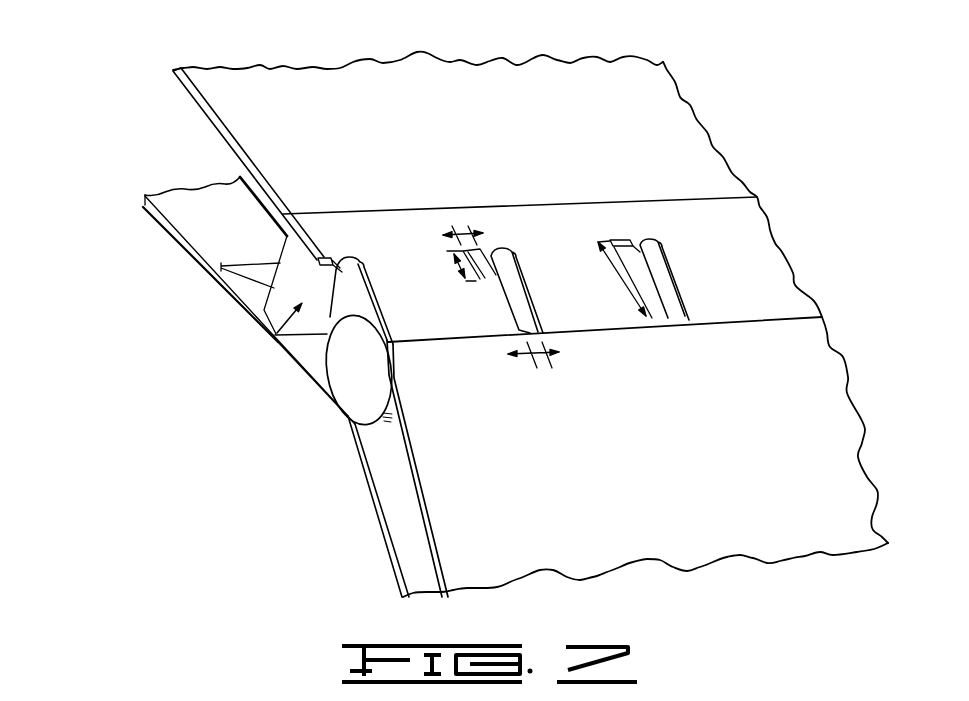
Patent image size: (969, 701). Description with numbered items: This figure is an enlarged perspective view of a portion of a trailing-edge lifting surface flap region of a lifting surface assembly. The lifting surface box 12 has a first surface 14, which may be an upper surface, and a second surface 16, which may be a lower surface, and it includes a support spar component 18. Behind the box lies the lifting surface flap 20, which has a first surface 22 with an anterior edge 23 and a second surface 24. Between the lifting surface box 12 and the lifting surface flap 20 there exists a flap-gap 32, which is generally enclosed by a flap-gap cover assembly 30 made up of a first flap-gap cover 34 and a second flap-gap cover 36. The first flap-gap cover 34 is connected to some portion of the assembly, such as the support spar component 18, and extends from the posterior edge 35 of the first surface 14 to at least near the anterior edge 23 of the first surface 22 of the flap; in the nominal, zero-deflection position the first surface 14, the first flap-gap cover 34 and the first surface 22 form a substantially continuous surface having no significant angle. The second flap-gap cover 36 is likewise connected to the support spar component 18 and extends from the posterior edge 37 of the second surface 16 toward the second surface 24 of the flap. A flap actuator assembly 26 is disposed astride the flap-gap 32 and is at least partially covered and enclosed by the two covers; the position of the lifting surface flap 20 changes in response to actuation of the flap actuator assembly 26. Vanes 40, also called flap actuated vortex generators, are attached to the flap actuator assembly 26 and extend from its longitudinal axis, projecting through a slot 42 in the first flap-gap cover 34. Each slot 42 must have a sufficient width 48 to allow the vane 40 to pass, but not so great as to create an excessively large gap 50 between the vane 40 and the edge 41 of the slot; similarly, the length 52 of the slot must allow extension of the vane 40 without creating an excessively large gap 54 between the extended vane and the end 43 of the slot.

The lifting surface box 12 is at (314, 119).
The first surface 14 is at (210, 123).
The second surface 16 is at (180, 243).
The support spar component 18 is at (221, 267).
The lifting surface flap 20 is at (588, 476).
The first surface of the lifting surface flap 22 is at (413, 485).
The anterior edge 23 is at (640, 338).
The second surface of the lifting surface flap 24 is at (383, 535).
The flap actuator assembly 26 is at (362, 382).
The flap-gap cover assembly 30 is at (772, 200).
The flap-gap 32 is at (273, 335).
The first flap-gap cover 34 is at (382, 228).
The posterior edge 35 is at (597, 196).
The second flap-gap cover 36 is at (297, 377).
The posterior edge 37 is at (237, 315).
The vane 40 is at (356, 262).
The edge of the slot 41 is at (481, 252).
The slot 42 is at (320, 257).
The end of the slot 43 is at (620, 240).
The width 48 is at (452, 234).
The gap 50 is at (550, 358).
The length 52 is at (627, 256).
The gap 54 is at (458, 266).